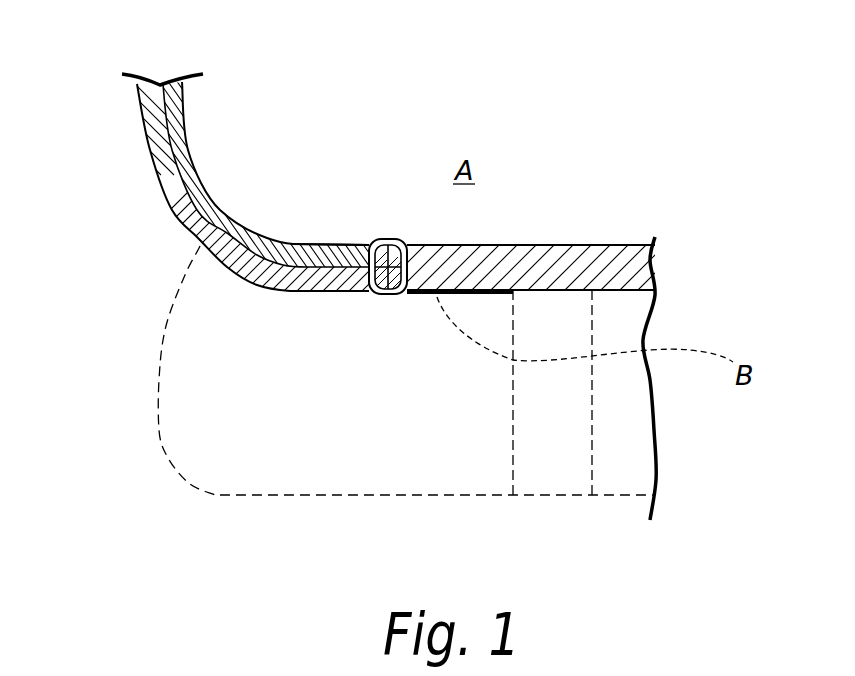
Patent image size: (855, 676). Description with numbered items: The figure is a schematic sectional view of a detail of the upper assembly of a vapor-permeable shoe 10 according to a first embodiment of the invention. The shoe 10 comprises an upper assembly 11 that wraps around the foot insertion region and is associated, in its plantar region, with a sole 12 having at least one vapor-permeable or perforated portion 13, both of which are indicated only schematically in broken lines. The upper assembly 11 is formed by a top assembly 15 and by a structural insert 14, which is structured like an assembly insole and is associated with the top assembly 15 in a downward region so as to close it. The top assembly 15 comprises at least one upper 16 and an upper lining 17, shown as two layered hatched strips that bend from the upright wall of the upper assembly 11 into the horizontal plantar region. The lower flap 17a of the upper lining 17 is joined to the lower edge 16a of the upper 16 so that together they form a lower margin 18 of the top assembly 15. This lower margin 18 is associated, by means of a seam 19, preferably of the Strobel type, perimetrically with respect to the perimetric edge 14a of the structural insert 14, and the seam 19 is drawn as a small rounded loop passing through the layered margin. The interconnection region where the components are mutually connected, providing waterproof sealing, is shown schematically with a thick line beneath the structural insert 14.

The vapor-permeable shoe 10 is at (594, 105).
The upper assembly 11 is at (712, 74).
The sole 12 is at (158, 458).
The vapor permeable or perforated portion 13 is at (652, 528).
The structural insert 14 is at (512, 232).
The perimetric edge 14a is at (423, 297).
The top assembly 15 is at (159, 206).
The upper 16 is at (140, 157).
The lower edge 16a is at (259, 291).
The upper lining 17 is at (197, 134).
The lower flap 17a is at (313, 243).
The lower margin 18 is at (325, 301).
The seam 19 is at (390, 238).